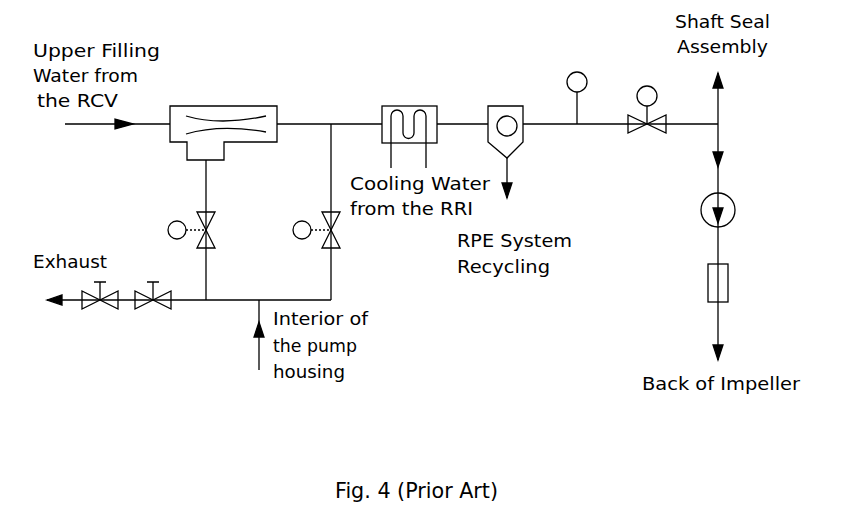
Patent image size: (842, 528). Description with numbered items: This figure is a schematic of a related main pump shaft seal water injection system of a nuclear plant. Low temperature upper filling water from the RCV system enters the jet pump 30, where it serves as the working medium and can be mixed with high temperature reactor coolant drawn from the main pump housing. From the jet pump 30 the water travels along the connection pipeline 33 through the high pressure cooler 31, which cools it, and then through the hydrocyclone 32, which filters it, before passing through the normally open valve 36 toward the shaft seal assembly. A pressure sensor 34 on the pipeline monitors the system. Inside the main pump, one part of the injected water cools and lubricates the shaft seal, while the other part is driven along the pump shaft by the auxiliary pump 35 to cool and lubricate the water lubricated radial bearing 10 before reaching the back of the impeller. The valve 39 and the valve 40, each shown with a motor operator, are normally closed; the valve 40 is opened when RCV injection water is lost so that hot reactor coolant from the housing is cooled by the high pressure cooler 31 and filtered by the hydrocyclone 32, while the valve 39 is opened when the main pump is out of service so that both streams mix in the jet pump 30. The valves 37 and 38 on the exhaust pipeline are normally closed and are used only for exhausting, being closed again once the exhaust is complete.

The water lubricated radial bearing 10 is at (708, 278).
The jet pump 30 is at (217, 106).
The high pressure cooler 31 is at (410, 106).
The hydrocyclone 32 is at (507, 106).
The connection pipeline 33 is at (353, 124).
The pressure sensor 34 is at (568, 75).
The auxiliary pump 35 is at (704, 220).
The valve 36 is at (643, 87).
The valve 37 is at (105, 309).
The valve 38 is at (165, 309).
The valve 39 is at (213, 240).
The valve 40 is at (322, 250).